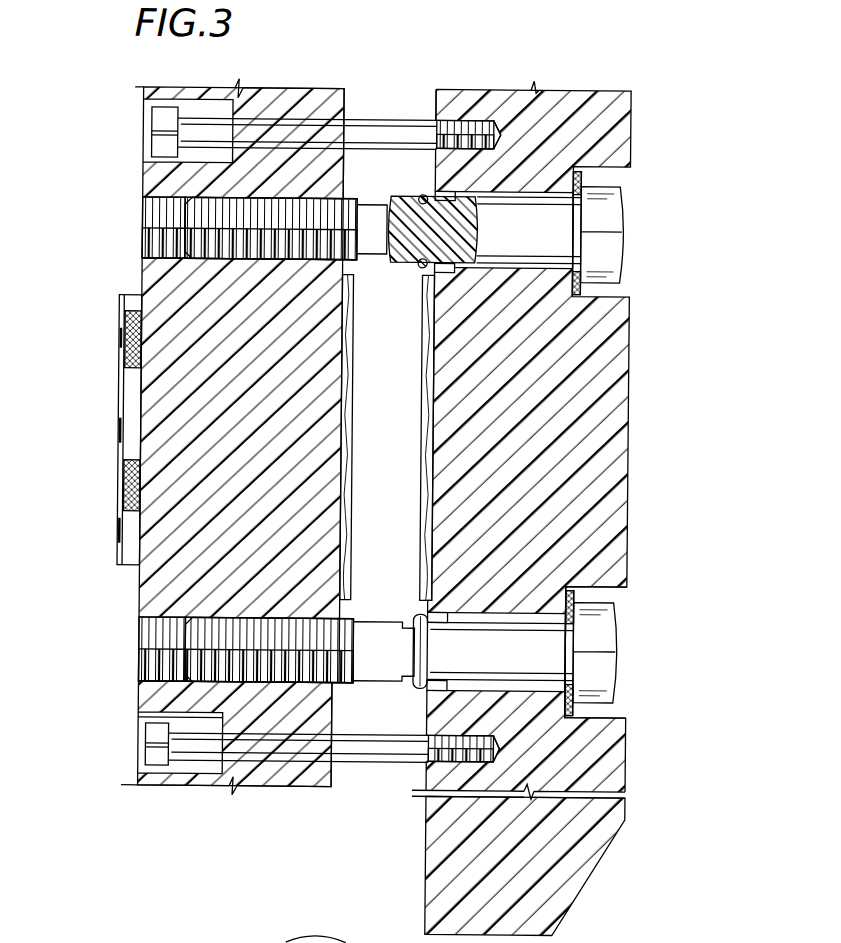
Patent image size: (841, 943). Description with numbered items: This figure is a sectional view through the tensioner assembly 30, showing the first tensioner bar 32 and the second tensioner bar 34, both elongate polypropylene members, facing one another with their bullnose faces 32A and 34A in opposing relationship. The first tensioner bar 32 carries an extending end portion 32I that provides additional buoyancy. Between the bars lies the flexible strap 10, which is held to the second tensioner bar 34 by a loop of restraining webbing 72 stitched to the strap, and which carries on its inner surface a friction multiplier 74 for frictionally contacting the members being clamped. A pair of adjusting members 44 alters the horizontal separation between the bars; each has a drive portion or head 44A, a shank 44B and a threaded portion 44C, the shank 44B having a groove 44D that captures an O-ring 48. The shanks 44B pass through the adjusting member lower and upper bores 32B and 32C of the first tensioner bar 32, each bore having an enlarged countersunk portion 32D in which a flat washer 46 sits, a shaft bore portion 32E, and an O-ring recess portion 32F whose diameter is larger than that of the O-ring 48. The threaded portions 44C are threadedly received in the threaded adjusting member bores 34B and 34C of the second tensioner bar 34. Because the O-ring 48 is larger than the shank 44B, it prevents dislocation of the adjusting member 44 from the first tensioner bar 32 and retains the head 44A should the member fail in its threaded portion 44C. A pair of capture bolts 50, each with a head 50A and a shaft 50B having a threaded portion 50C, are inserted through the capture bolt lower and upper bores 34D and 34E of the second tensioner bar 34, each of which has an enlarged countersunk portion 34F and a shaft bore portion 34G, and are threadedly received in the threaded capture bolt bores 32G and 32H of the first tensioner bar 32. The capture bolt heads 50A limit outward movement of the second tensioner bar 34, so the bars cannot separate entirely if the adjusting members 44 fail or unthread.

The flexible strap 10 is at (355, 377).
The tensioner assembly 30 is at (646, 427).
The first tensioner bar 32 is at (570, 92).
The bullnose face 32A is at (433, 114).
The adjusting member lower bore 32B is at (531, 602).
The adjusting member upper bore 32C is at (532, 274).
The enlarged countersunk portion 32D is at (607, 715).
The shaft bore portion 32E is at (531, 691).
The O-ring recess portion 32F is at (430, 692).
The capture bolt bore 32G is at (461, 765).
The capture bolt bore 32H is at (480, 131).
The extending end portion 32I is at (563, 893).
The second tensioner bar 34 is at (332, 102).
The bullnose face 34A is at (342, 101).
The adjusting member bore 34B is at (140, 660).
The adjusting member bore 34C is at (150, 226).
The capture bolt lower bore 34D is at (263, 769).
The capture bolt upper bore 34E is at (285, 102).
The enlarged countersunk portion 34F is at (211, 772).
The shaft bore portion 34G is at (315, 792).
The adjusting member 44 is at (579, 167).
The drive portion or head 44A is at (621, 225).
The shank 44B is at (386, 625).
The threaded portion 44C is at (198, 634).
The groove 44D is at (417, 267).
The flat washer 46 is at (576, 172).
The O-ring 48 is at (420, 197).
The capture bolt 50 is at (204, 128).
The drive portion or head 50A is at (159, 150).
The shaft 50B is at (237, 132).
The threaded portion 50C is at (450, 127).
The loop of restraining webbing 72 is at (118, 367).
The friction multiplier 74 is at (352, 427).